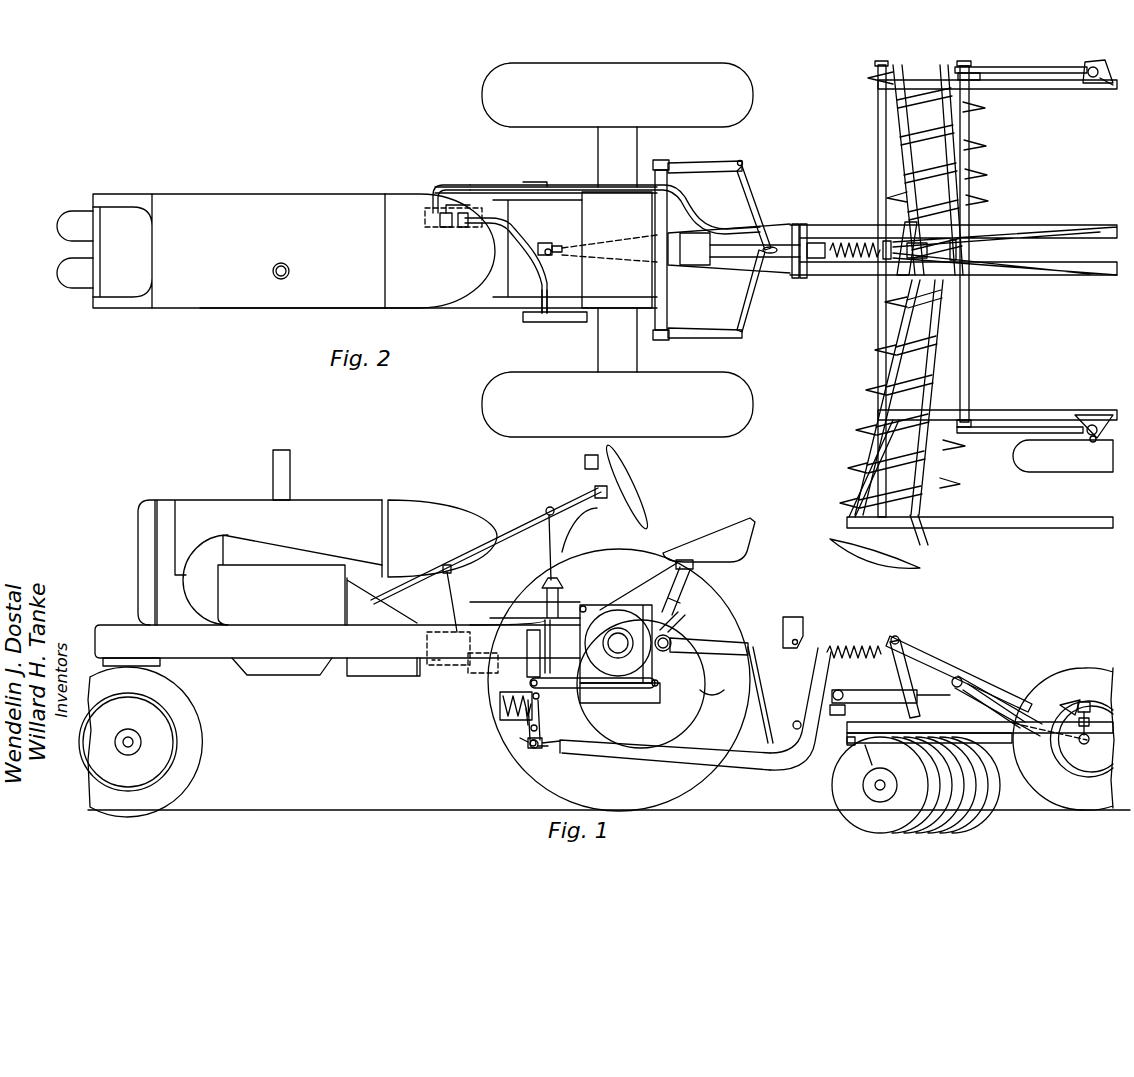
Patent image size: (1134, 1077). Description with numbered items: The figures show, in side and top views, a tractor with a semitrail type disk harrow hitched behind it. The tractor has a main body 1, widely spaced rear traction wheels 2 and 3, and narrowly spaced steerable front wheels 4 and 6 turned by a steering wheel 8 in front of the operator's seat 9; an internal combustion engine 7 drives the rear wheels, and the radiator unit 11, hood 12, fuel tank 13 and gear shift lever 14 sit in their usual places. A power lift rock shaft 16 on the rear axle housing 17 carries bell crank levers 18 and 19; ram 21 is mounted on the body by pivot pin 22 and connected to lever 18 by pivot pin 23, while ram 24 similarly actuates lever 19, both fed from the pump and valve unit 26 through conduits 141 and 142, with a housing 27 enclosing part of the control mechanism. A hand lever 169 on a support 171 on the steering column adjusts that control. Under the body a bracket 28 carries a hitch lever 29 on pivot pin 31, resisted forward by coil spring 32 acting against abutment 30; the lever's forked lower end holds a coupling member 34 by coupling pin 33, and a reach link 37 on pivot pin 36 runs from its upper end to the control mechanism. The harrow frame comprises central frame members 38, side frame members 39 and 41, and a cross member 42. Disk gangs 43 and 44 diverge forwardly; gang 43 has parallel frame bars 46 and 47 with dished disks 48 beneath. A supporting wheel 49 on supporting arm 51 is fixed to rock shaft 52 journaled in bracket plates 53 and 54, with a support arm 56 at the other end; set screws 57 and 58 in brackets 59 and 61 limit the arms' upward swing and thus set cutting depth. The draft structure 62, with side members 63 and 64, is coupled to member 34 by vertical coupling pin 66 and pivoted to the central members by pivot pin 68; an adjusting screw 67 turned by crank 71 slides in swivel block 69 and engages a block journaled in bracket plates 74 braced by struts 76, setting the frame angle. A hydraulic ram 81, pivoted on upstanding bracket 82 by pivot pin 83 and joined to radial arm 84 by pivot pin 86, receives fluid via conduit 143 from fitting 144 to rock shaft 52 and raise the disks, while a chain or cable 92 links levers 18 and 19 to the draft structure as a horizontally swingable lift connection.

In FIG. 2, the main body 1 is at (347, 241).
In FIG. 1, the main body 1 is at (308, 647).
In FIG. 2, the rear traction wheel 2 is at (483, 411).
In FIG. 2, the rear traction wheel 3 is at (483, 109).
In FIG. 1, the rear traction wheel 3 is at (705, 792).
In FIG. 2, the front wheel 4 is at (60, 266).
In FIG. 1, the front wheel 4 is at (195, 770).
In FIG. 2, the front wheel 6 is at (57, 228).
In FIG. 1, the internal combustion engine 7 is at (313, 562).
In FIG. 1, the steering wheel 8 is at (628, 483).
In FIG. 1, the operator's seat 9 is at (728, 520).
In FIG. 2, the radiator unit 11 is at (140, 252).
In FIG. 1, the radiator unit 11 is at (138, 550).
In FIG. 2, the hood 12 is at (238, 303).
In FIG. 1, the hood 12 is at (232, 498).
In FIG. 2, the fuel tank 13 is at (427, 308).
In FIG. 1, the fuel tank 13 is at (448, 507).
In FIG. 1, the gear shift lever 14 is at (546, 512).
In FIG. 2, the rock shaft 16 is at (668, 286).
In FIG. 1, the rock shaft 16 is at (678, 630).
In FIG. 2, the rear axle housing 17 is at (621, 302).
In FIG. 1, the rear axle housing 17 is at (660, 590).
In FIG. 2, the bell crank lever 18 is at (690, 338).
In FIG. 1, the bell crank lever 18 is at (712, 640).
In FIG. 2, the bell crank lever 19 is at (700, 165).
In FIG. 2, the actuating ram 21 is at (572, 322).
In FIG. 1, the actuating ram 21 is at (616, 703).
In FIG. 1, the pivot pin 22 is at (490, 668).
In FIG. 1, the pivot pin 23 is at (660, 681).
In FIG. 2, the actuating ram 24 is at (560, 185).
In FIG. 2, the pump and valve unit 26 is at (425, 210).
In FIG. 1, the pump and valve unit 26 is at (427, 645).
In FIG. 2, the housing 27 is at (467, 228).
In FIG. 1, the housing 27 is at (492, 655).
In FIG. 1, the bracket 28 is at (525, 715).
In FIG. 2, the hitch lever 29 is at (543, 242).
In FIG. 1, the hitch lever 29 is at (541, 718).
In FIG. 1, the abutment 30 is at (500, 708).
In FIG. 1, the pivot pin 31 is at (530, 748).
In FIG. 1, the coil spring 32 is at (528, 728).
In FIG. 1, the coupling pin 33 is at (536, 750).
In FIG. 2, the coupling member 34 is at (560, 245).
In FIG. 1, the coupling member 34 is at (525, 742).
In FIG. 1, the pivot pin 36 is at (540, 698).
In FIG. 1, the reach link 37 is at (500, 693).
In FIG. 2, the central frame members 38 is at (1077, 264).
In FIG. 1, the central frame members 38 is at (870, 738).
In FIG. 2, the side frame member 39 is at (1040, 90).
In FIG. 2, the side frame member 41 is at (1031, 529).
In FIG. 1, the side frame member 41 is at (1028, 734).
In FIG. 2, the cross member 42 is at (878, 341).
In FIG. 2, the disk gang 43 is at (858, 447).
In FIG. 2, the disk gang 44 is at (985, 192).
In FIG. 2, the frame bar 46 is at (858, 481).
In FIG. 1, the frame bar 46 is at (847, 745).
In FIG. 2, the frame bar 47 is at (925, 496).
In FIG. 1, the frame bar 47 is at (884, 746).
In FIG. 2, the dished disks 48 is at (856, 546).
In FIG. 1, the dished disks 48 is at (860, 817).
In FIG. 2, the supporting wheel 49 is at (1044, 473).
In FIG. 1, the supporting wheel 49 is at (1066, 808).
In FIG. 2, the supporting arm 51 is at (1000, 434).
In FIG. 1, the supporting arm 51 is at (1030, 704).
In FIG. 2, the rock shaft 52 is at (970, 356).
In FIG. 2, the bracket plate 53 is at (975, 412).
In FIG. 2, the bracket plate 54 is at (975, 85).
In FIG. 2, the support arm 56 is at (1022, 75).
In FIG. 2, the set screw 57 is at (1093, 441).
In FIG. 1, the set screw 57 is at (1086, 702).
In FIG. 2, the set screw 58 is at (1090, 85).
In FIG. 2, the bracket 59 is at (1095, 415).
In FIG. 1, the bracket 59 is at (1062, 705).
In FIG. 2, the bracket 61 is at (1110, 90).
In FIG. 1, the draft structure 62 is at (672, 770).
In FIG. 2, the side member 63 is at (755, 278).
In FIG. 1, the side member 63 is at (768, 770).
In FIG. 2, the side member 64 is at (752, 220).
In FIG. 2, the coupling pin 66 is at (550, 256).
In FIG. 1, the coupling pin 66 is at (545, 748).
In FIG. 2, the adjusting screw 67 is at (878, 262).
In FIG. 1, the adjusting screw 67 is at (864, 650).
In FIG. 1, the pivot pin 68 is at (796, 721).
In FIG. 2, the swivel block 69 is at (818, 240).
In FIG. 2, the crank 71 is at (794, 265).
In FIG. 1, the crank 71 is at (795, 617).
In FIG. 2, the bracket plates 74 is at (895, 235).
In FIG. 1, the bracket plates 74 is at (896, 664).
In FIG. 2, the struts 76 is at (1043, 216).
In FIG. 1, the struts 76 is at (950, 665).
In FIG. 2, the hydraulic ram 81 is at (845, 258).
In FIG. 1, the hydraulic ram 81 is at (870, 695).
In FIG. 1, the upstanding bracket 82 is at (847, 738).
In FIG. 1, the pivot pin 83 is at (840, 690).
In FIG. 2, the radial arm 84 is at (928, 250).
In FIG. 1, the radial arm 84 is at (1000, 690).
In FIG. 1, the pivot pin 86 is at (968, 684).
In FIG. 1, the chain or cable 92 is at (756, 718).
In FIG. 2, the conduit 141 is at (540, 315).
In FIG. 1, the conduit 141 is at (545, 660).
In FIG. 2, the conduit 142 is at (447, 185).
In FIG. 1, the conduit 142 is at (449, 612).
In FIG. 2, the conduit 143 is at (700, 207).
In FIG. 1, the conduit 143 is at (712, 684).
In FIG. 2, the fitting 144 is at (445, 228).
In FIG. 1, the fitting 144 is at (460, 640).
In FIG. 1, the hand lever 169 is at (583, 463).
In FIG. 1, the support 171 is at (606, 500).